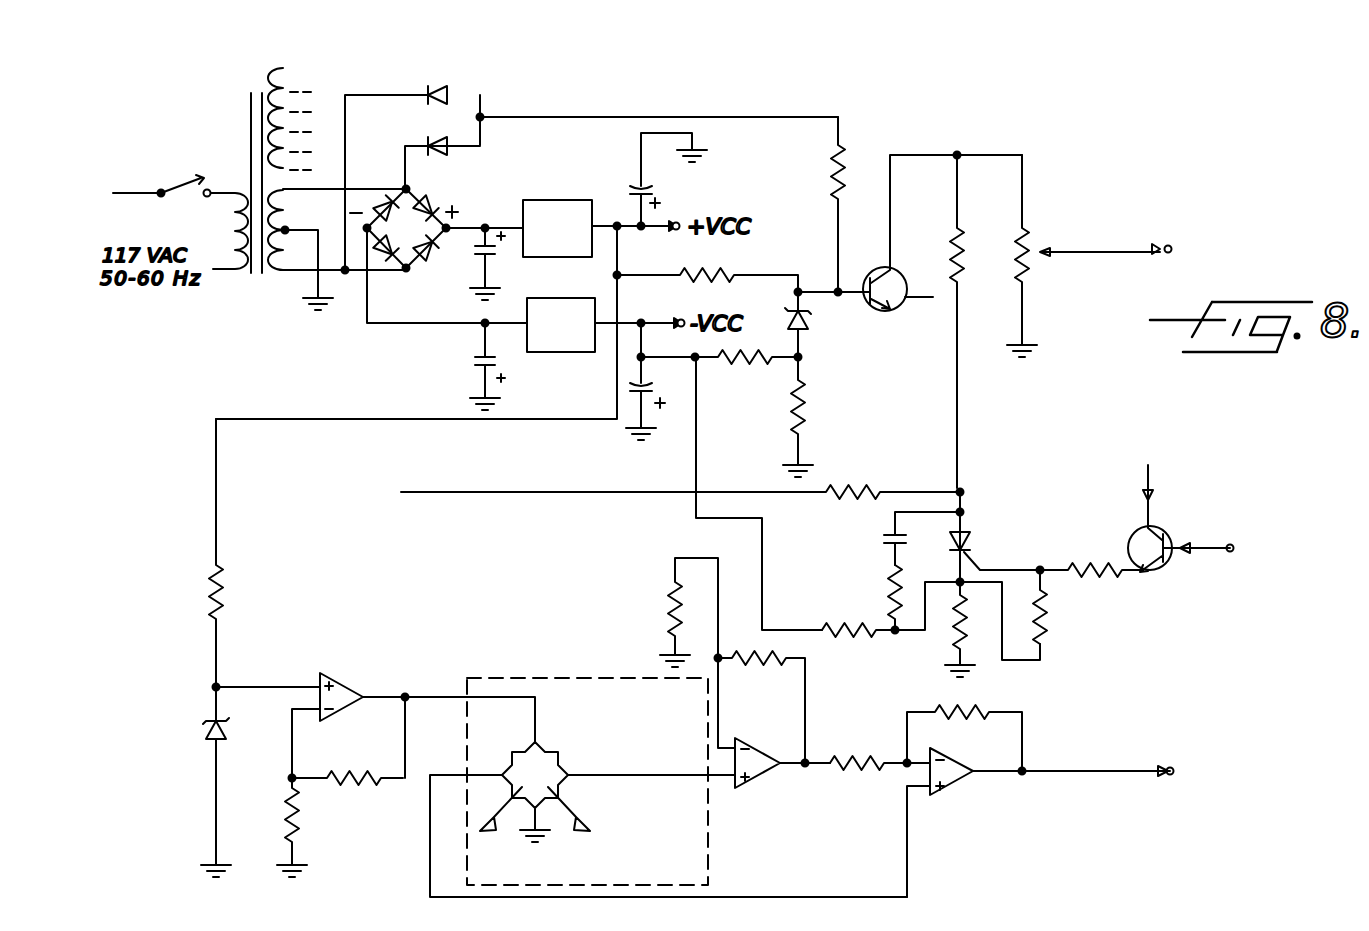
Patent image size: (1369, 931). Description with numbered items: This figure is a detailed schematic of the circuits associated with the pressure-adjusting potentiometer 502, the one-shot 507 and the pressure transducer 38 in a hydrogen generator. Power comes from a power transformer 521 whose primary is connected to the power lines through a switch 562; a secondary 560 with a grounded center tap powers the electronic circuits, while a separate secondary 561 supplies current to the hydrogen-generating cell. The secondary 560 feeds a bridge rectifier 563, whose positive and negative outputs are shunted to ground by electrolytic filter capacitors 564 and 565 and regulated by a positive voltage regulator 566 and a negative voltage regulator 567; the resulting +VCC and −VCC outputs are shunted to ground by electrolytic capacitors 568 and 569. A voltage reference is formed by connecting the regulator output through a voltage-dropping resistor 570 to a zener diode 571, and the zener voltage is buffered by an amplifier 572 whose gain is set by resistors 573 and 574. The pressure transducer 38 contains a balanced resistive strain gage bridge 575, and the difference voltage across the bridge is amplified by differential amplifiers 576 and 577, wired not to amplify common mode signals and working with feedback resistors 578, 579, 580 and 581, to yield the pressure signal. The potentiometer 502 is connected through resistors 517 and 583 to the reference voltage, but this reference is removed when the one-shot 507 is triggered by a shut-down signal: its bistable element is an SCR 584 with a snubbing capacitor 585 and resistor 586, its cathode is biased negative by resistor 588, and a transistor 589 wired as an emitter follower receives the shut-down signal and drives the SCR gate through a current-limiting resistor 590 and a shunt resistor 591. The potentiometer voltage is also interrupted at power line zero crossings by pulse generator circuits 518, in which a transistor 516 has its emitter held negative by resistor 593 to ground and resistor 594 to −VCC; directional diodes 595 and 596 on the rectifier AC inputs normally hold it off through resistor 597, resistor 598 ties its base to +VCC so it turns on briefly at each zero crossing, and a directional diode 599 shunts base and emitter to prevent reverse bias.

The pressure transducer 38 is at (758, 845).
The pressure-adjusting potentiometer 502 is at (1038, 284).
The one-shot 507 is at (988, 485).
The transistor 516 is at (933, 297).
The resistor 517 is at (958, 278).
The pulse generator circuits 518 is at (936, 137).
The power transformer 521 is at (239, 290).
The secondary 560 is at (294, 270).
The secondary 561 is at (284, 56).
The switch 562 is at (186, 179).
The bridge rectifier 563 is at (446, 197).
The electrolytic filter capacitor 564 is at (473, 288).
The electrolytic filter capacitor 565 is at (467, 370).
The positive voltage regulator 566 is at (545, 200).
The negative voltage regulator 567 is at (552, 352).
The electrolytic capacitor 568 is at (654, 184).
The electrolytic capacitor 569 is at (612, 412).
The voltage-dropping resistor 570 is at (202, 590).
The zener diode 571 is at (204, 742).
The amplifier 572 is at (352, 664).
The resistor 573 is at (308, 839).
The resistor 574 is at (380, 778).
The balanced resistive strain gage bridge 575 is at (630, 726).
The differential amplifier 576 is at (760, 775).
The differential amplifier 577 is at (960, 780).
The feedback resistor 578 is at (658, 606).
The feedback resistor 579 is at (784, 672).
The feedback resistor 580 is at (887, 770).
The feedback resistor 581 is at (974, 708).
The resistor 583 is at (856, 488).
The SCR 584 is at (982, 533).
The snubbing capacitor 585 is at (883, 543).
The resistor 586 is at (884, 595).
The resistor 588 is at (868, 641).
The transistor 589 is at (1166, 575).
The current-limiting resistor 590 is at (1095, 580).
The shunt resistor 591 is at (1049, 620).
The resistor 593 is at (812, 398).
The resistor 594 is at (760, 370).
The directional diode 595 is at (424, 140).
The directional diode 596 is at (426, 80).
The resistor 597 is at (826, 178).
The resistor 598 is at (725, 264).
The directional diode 599 is at (803, 315).